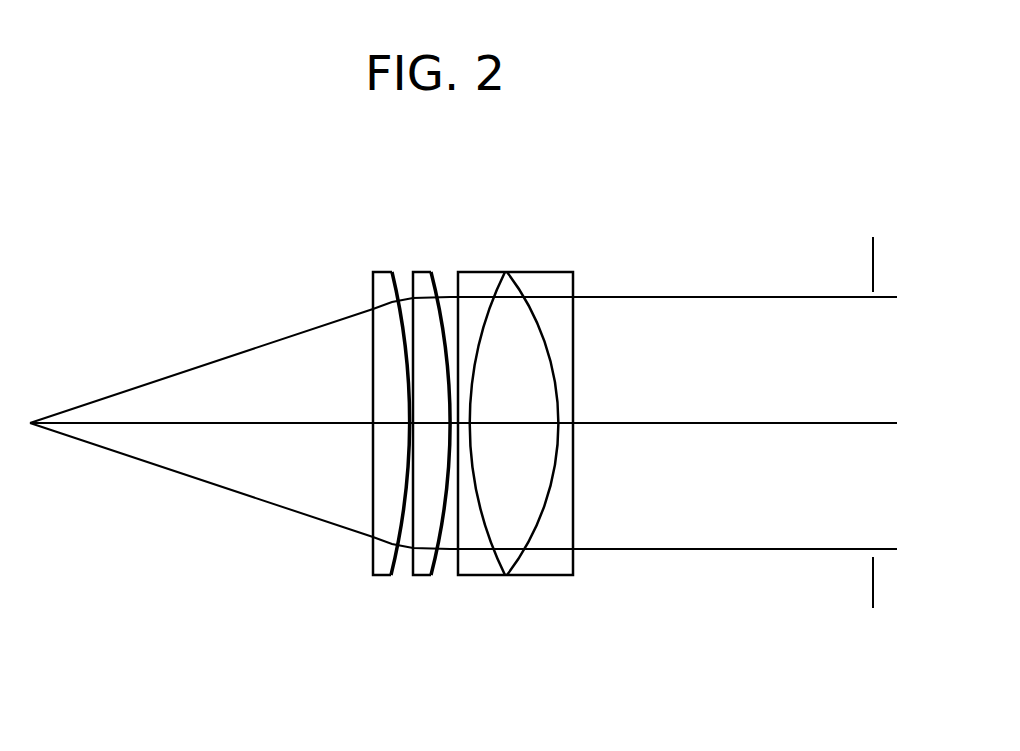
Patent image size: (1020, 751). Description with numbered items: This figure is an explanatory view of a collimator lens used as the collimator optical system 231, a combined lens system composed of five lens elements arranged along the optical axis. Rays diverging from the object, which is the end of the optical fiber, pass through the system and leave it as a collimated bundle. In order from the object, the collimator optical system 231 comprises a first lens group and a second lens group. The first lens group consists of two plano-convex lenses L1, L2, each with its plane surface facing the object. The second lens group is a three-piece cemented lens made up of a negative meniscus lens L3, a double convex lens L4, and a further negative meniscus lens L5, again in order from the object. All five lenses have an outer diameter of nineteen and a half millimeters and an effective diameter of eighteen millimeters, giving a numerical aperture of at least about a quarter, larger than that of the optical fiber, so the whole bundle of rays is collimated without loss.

The plano-convex lens L1 is at (384, 565).
The plano-convex lens L2 is at (426, 565).
The negative meniscus lens L3 is at (478, 576).
The double convex lens L4 is at (508, 565).
The negative meniscus lens L5 is at (539, 467).
The collimator optical system 231 is at (474, 492).